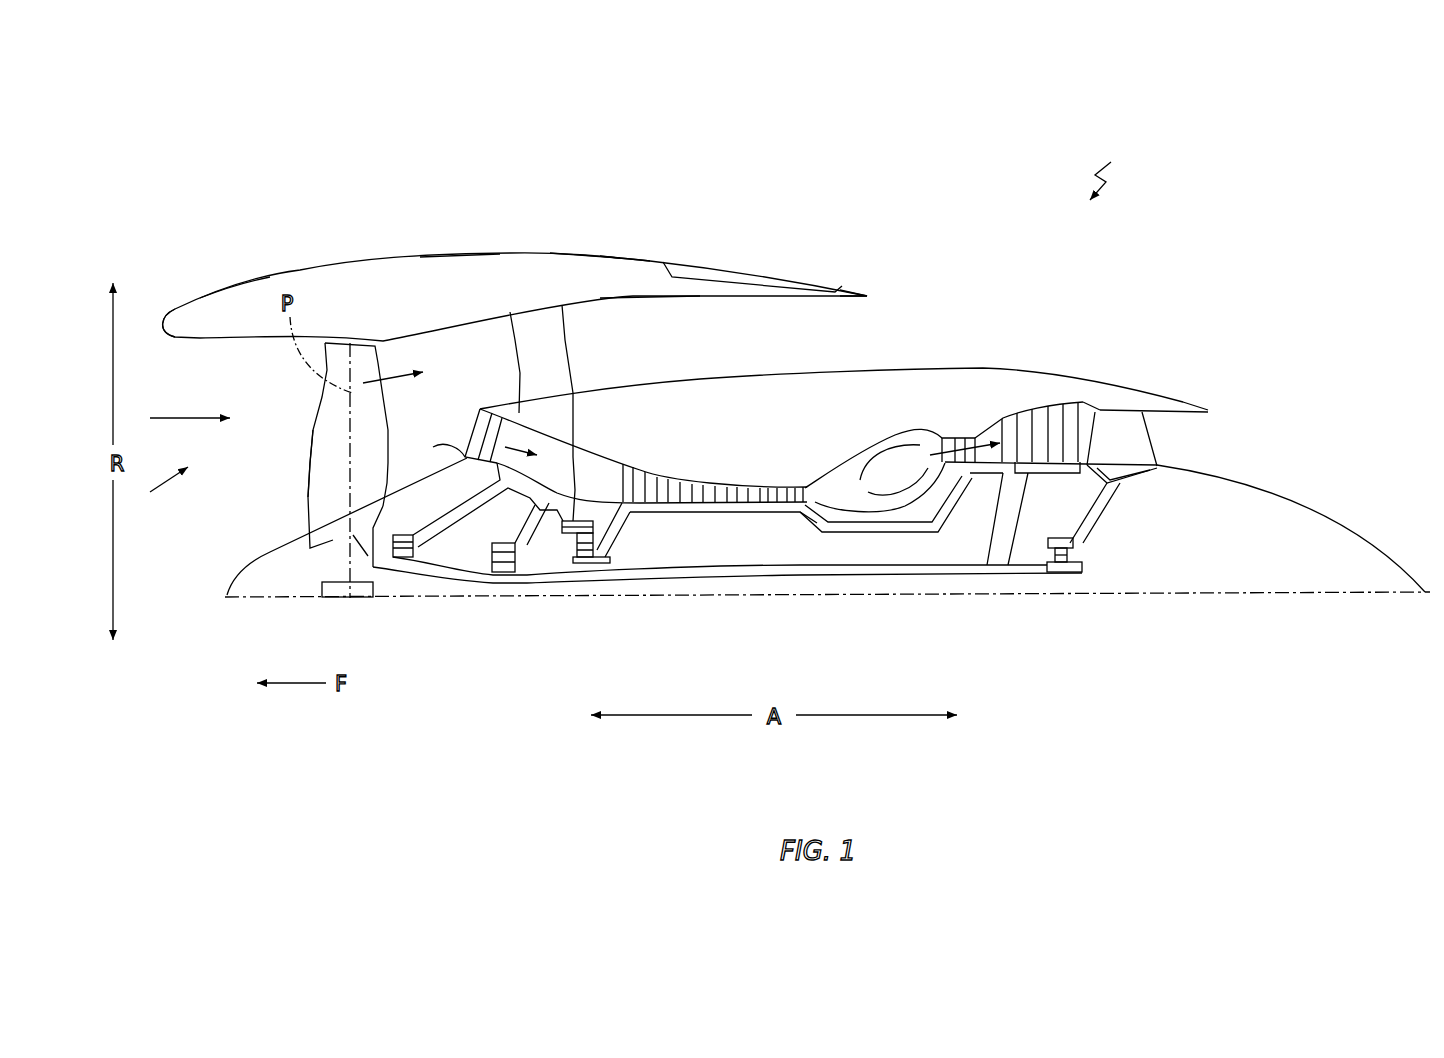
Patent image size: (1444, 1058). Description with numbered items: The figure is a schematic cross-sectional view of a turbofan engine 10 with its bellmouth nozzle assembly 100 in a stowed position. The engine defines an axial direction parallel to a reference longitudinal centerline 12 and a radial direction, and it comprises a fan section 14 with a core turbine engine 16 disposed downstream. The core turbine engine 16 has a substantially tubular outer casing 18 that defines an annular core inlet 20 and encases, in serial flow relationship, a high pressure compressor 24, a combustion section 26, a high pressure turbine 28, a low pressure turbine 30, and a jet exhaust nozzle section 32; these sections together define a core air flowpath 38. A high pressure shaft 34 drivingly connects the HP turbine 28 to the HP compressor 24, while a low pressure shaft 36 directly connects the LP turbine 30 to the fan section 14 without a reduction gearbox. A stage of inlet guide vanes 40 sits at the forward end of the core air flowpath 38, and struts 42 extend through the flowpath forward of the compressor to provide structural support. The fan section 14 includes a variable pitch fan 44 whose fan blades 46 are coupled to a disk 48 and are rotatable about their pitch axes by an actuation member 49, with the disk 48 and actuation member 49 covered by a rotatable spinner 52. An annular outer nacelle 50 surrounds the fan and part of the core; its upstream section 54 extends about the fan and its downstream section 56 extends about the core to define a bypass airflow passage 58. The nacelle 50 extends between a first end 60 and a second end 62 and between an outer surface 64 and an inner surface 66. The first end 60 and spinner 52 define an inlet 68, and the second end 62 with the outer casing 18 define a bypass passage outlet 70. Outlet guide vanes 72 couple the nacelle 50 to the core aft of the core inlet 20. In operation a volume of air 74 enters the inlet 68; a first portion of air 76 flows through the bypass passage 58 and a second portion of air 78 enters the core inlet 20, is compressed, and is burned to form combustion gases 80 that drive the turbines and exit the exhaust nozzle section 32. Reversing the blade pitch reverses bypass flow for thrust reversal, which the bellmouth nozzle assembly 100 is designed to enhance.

The turbofan engine 10 is at (1105, 165).
The longitudinal centerline 12 is at (1331, 594).
The fan section 14 is at (372, 300).
The core turbine engine 16 is at (1147, 357).
The outer casing 18 is at (930, 370).
The core inlet 20 is at (470, 420).
The high pressure compressor 24 is at (727, 473).
The combustion section 26 is at (893, 427).
The high pressure turbine 28 is at (983, 413).
The low pressure turbine 30 is at (1067, 393).
The jet exhaust nozzle section 32 is at (1137, 420).
The high pressure shaft 34 is at (867, 527).
The low pressure shaft 36 is at (953, 570).
The core air flowpath 38 is at (603, 470).
The inlet guide vanes 40 is at (490, 423).
The struts 42 is at (562, 457).
The variable pitch fan 44 is at (300, 387).
The fan blades 46 is at (310, 478).
The disk 48 is at (328, 530).
The actuation member 49 is at (377, 592).
The outer nacelle 50 is at (460, 278).
The spinner 52 is at (270, 552).
The upstream section 54 is at (250, 270).
The downstream section 56 is at (617, 243).
The bypass airflow passage 58 is at (705, 336).
The first end 60 is at (170, 310).
The second end 62 is at (868, 290).
The outer surface 64 is at (582, 250).
The inner surface 66 is at (638, 298).
The inlet 68 is at (159, 494).
The bypass passage outlet 70 is at (878, 332).
The outlet guide vanes 72 is at (537, 327).
The volume of air 74 is at (183, 416).
The first portion of air 76 is at (385, 347).
The second portion of air 78 is at (445, 445).
The combustion gases 80 is at (970, 437).
The bellmouth nozzle assembly 100 is at (753, 253).